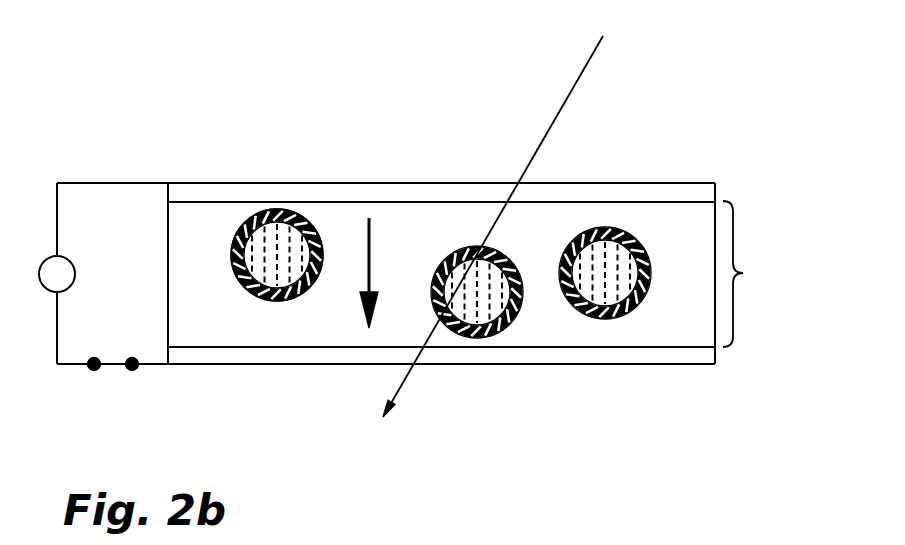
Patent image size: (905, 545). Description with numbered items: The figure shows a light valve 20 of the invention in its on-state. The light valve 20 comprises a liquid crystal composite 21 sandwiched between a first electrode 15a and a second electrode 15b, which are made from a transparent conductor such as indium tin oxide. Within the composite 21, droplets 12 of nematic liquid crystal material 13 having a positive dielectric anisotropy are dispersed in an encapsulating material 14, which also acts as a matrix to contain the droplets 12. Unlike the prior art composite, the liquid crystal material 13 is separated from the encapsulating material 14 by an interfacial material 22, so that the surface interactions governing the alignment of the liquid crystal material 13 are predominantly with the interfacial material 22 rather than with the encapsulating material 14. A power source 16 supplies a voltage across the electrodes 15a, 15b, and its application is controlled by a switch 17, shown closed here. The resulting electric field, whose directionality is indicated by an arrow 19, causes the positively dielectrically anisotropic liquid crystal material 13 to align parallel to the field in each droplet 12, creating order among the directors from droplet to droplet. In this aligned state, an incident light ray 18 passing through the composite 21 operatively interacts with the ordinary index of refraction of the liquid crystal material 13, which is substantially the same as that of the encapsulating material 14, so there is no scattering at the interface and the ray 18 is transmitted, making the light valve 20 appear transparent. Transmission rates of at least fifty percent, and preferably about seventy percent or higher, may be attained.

The droplets 12 is at (623, 317).
The liquid crystal material 13 is at (265, 298).
The encapsulating material 14 is at (562, 317).
The first electrode 15a is at (685, 183).
The second electrode 15b is at (695, 364).
The power source 16 is at (38, 272).
The switch 17 is at (133, 371).
The incident light ray 18 is at (508, 217).
The arrow 19 is at (369, 245).
The light valve 20 is at (153, 127).
The liquid crystal composite 21 is at (761, 274).
The interfacial material 22 is at (305, 218).